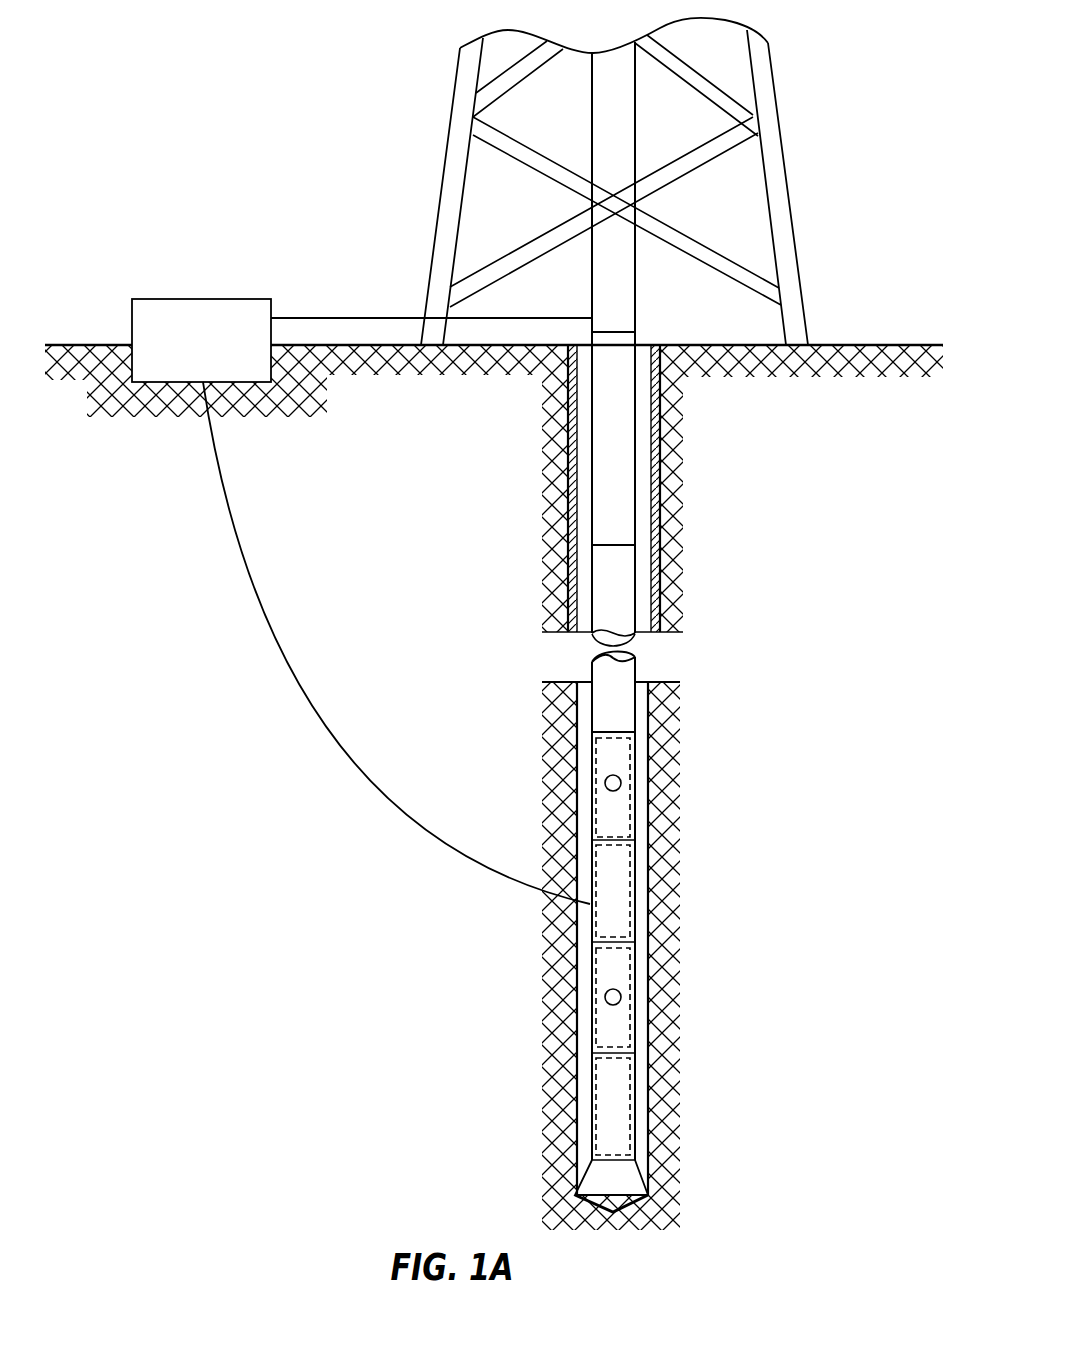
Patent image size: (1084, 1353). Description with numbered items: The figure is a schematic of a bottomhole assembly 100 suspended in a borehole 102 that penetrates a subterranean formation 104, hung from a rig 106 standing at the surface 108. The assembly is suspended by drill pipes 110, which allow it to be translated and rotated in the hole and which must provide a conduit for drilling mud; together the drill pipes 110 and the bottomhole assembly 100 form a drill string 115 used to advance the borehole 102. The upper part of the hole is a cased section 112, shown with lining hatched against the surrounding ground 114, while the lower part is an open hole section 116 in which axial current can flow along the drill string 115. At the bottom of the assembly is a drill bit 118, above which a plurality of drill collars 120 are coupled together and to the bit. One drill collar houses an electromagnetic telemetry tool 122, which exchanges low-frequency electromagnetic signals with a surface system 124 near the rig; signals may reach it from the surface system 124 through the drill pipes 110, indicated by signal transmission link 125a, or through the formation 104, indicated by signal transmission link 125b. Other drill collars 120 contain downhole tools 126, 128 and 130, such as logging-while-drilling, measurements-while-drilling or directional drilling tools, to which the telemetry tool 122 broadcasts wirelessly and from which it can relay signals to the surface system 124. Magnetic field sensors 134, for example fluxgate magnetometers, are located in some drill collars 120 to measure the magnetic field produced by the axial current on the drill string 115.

The bottomhole assembly 100 is at (635, 895).
The borehole 102 is at (653, 736).
The subterranean formation 104 is at (670, 769).
The rig 106 is at (790, 225).
The surface 108 is at (875, 345).
The drill pipes 110 is at (635, 462).
The cased section 112 is at (575, 485).
The cement 114 is at (568, 547).
The drill string 115 is at (635, 530).
The open hole section 116 is at (568, 827).
The drill bit 118 is at (622, 1187).
The drill collars 120 is at (593, 756).
The EMAG telemetry tool 122 is at (620, 868).
The surface system 124 is at (207, 312).
The signal transmission link 125a is at (366, 318).
The signal transmission link 125b is at (258, 593).
The downhole tool 126 is at (620, 1120).
The downhole tool 128 is at (620, 1010).
The downhole tool 130 is at (620, 818).
The magnetic field sensors 134 is at (605, 783).